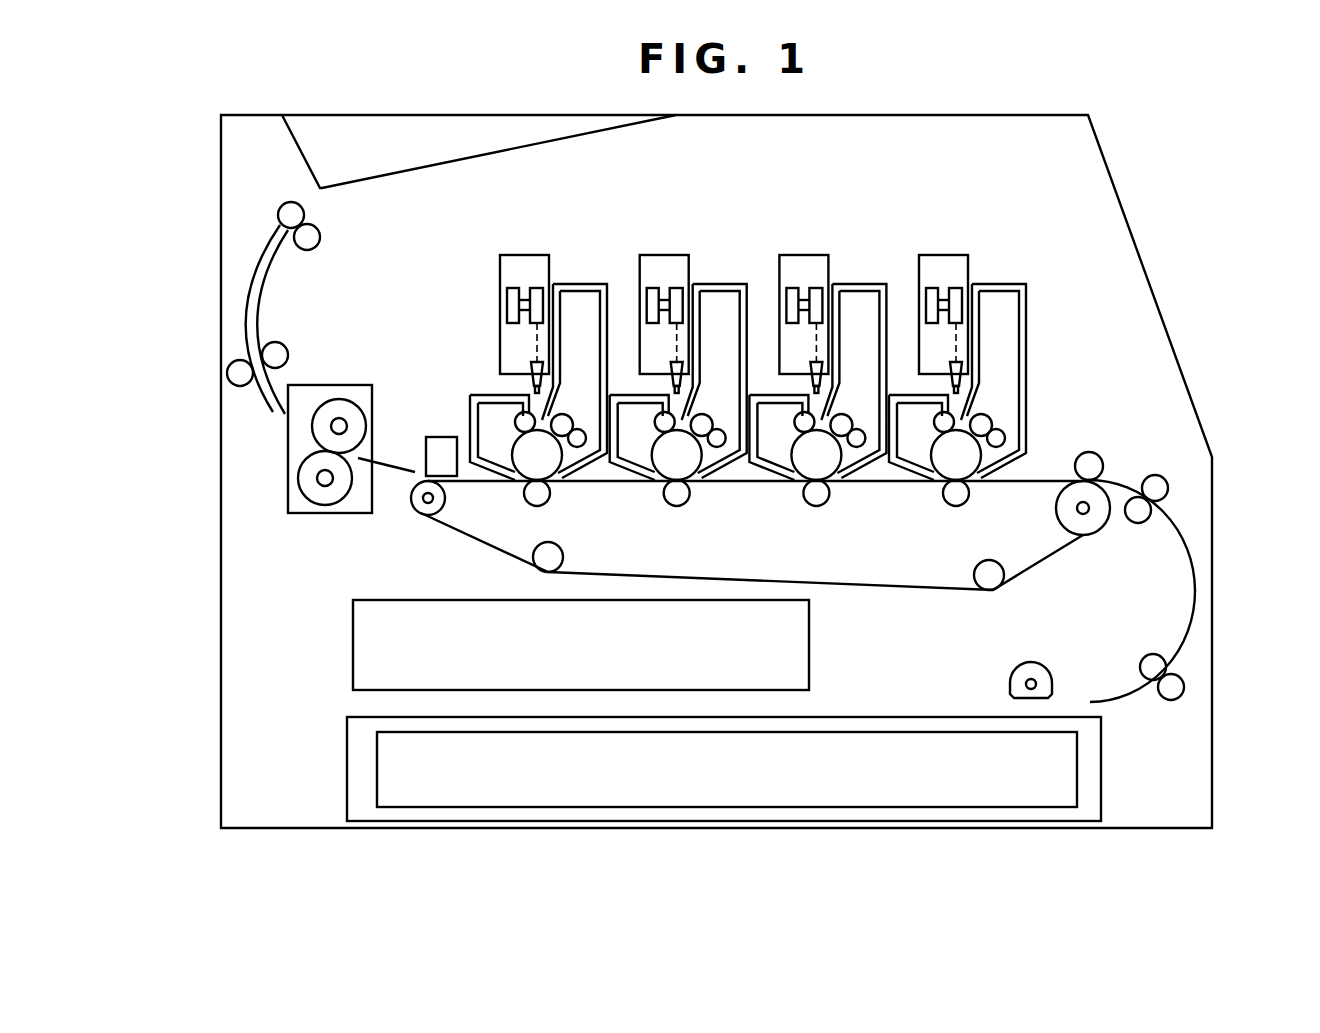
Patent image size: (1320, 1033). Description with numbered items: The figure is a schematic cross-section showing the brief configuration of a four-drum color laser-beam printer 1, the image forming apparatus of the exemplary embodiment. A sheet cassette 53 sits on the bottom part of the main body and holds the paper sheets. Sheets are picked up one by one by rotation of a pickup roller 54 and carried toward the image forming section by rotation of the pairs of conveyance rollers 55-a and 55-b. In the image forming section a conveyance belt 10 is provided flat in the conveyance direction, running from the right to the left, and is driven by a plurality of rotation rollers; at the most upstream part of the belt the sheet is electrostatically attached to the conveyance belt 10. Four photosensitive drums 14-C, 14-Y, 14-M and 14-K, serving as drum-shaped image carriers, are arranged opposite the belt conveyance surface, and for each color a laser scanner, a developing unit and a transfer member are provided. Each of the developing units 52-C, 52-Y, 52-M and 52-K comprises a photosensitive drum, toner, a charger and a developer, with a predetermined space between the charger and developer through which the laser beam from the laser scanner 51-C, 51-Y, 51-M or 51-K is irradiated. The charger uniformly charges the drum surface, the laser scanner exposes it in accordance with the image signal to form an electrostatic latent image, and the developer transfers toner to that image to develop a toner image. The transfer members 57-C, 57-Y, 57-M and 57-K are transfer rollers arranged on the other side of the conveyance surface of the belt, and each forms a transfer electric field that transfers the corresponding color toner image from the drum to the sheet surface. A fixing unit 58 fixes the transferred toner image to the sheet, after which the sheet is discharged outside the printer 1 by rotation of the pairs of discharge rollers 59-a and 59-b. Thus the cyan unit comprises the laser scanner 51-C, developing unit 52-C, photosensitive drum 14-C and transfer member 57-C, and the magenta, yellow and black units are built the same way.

The color laser-beam printer 1 is at (1103, 143).
The conveyance belt 10 is at (1038, 480).
The photosensitive drum 14-K is at (527, 467).
The photosensitive drum 14-M is at (653, 465).
The photosensitive drum 14-Y is at (795, 465).
The photosensitive drum 14-C is at (933, 465).
The laser scanner 51-K is at (521, 267).
The laser scanner 51-M is at (661, 290).
The laser scanner 51-Y is at (802, 290).
The laser scanner 51-C is at (941, 290).
The developing unit 52-K is at (578, 300).
The developing unit 52-M is at (716, 349).
The developing unit 52-Y is at (853, 349).
The developing unit 52-C is at (994, 349).
The transfer member 57-K is at (536, 498).
The transfer member 57-M is at (649, 526).
The transfer member 57-Y is at (791, 526).
The transfer member 57-C is at (929, 526).
The sheet cassette 53 is at (873, 748).
The pickup roller 54 is at (1043, 680).
The pair of conveyance rollers 55-a is at (1188, 692).
The pair of conveyance rollers 55-b is at (1152, 486).
The fixing unit 58 is at (306, 500).
The pair of discharge rollers 59-a is at (245, 390).
The pair of discharge rollers 59-b is at (320, 226).